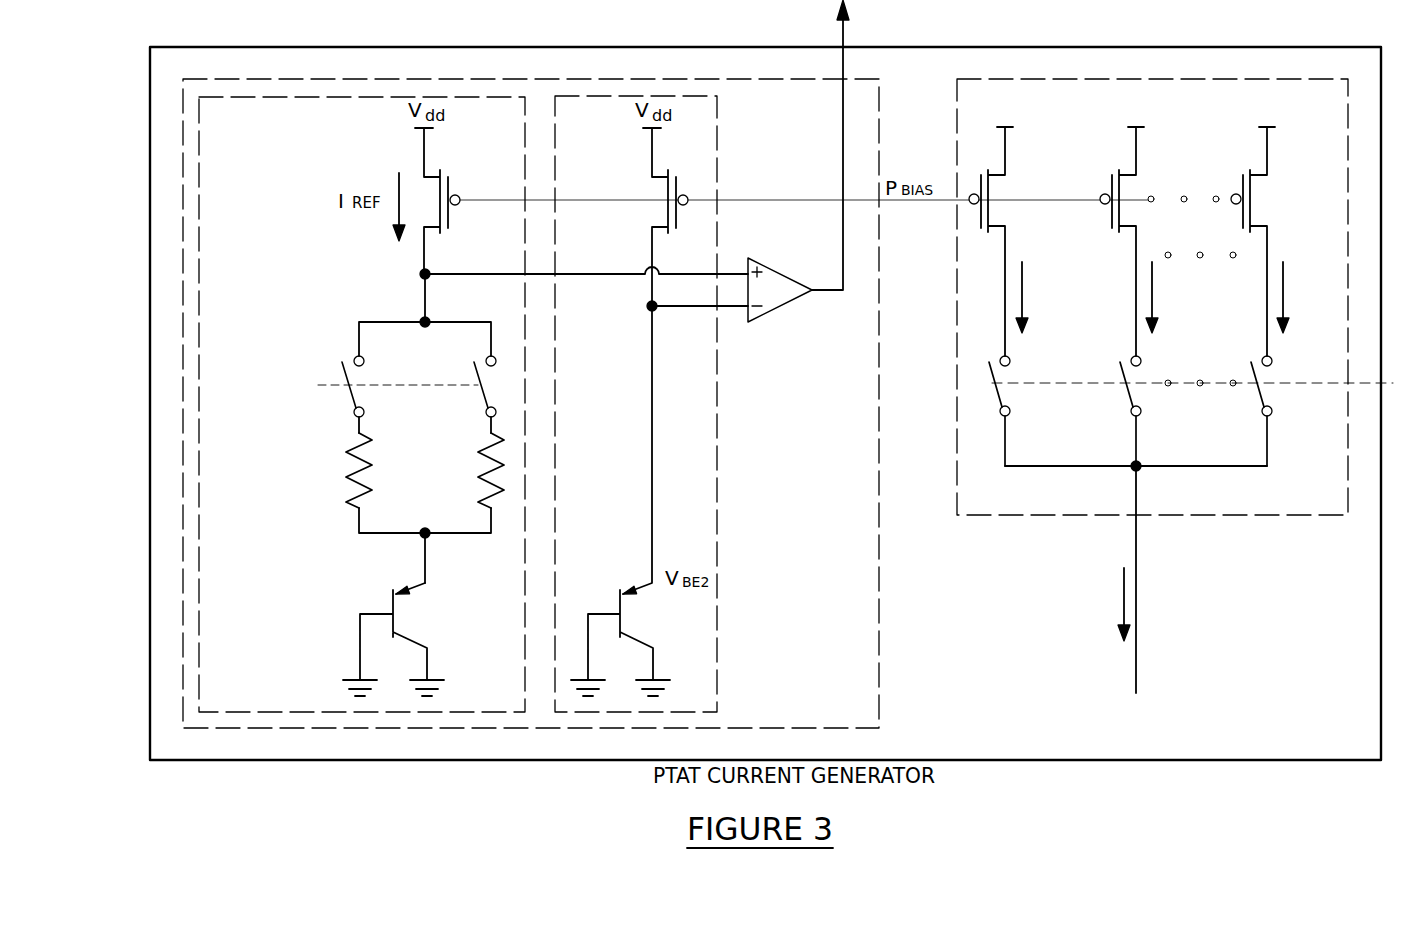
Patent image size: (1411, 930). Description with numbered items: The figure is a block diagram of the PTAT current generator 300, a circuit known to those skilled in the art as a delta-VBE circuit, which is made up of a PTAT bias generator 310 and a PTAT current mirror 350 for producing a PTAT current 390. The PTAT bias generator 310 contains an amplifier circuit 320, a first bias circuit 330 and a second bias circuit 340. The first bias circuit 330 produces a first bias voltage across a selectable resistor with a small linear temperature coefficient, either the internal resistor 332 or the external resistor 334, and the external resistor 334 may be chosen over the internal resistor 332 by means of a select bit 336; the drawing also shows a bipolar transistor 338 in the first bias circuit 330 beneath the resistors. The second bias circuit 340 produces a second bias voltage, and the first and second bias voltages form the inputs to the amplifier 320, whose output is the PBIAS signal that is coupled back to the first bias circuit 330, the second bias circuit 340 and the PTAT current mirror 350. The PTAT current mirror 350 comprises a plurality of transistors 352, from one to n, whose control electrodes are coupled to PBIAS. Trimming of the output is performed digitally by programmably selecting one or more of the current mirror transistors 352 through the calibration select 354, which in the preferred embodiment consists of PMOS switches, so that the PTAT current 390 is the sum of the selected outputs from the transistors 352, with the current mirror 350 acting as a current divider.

The PTAT current generator 300 is at (630, 47).
The PTAT bias generator 310 is at (880, 578).
The amplifier circuit 320 is at (790, 310).
The first bias circuit 330 is at (199, 213).
The internal resistor 332 is at (486, 487).
The external resistor 334 is at (352, 487).
The select bit 336 is at (358, 390).
The bipolar transistor 338 is at (413, 631).
The second bias circuit 340 is at (718, 503).
The PTAT current mirror 350 is at (989, 517).
The current mirror transistors 352 is at (1110, 185).
The calibration select switches 354 is at (1365, 392).
The PTAT current 390 is at (1138, 644).